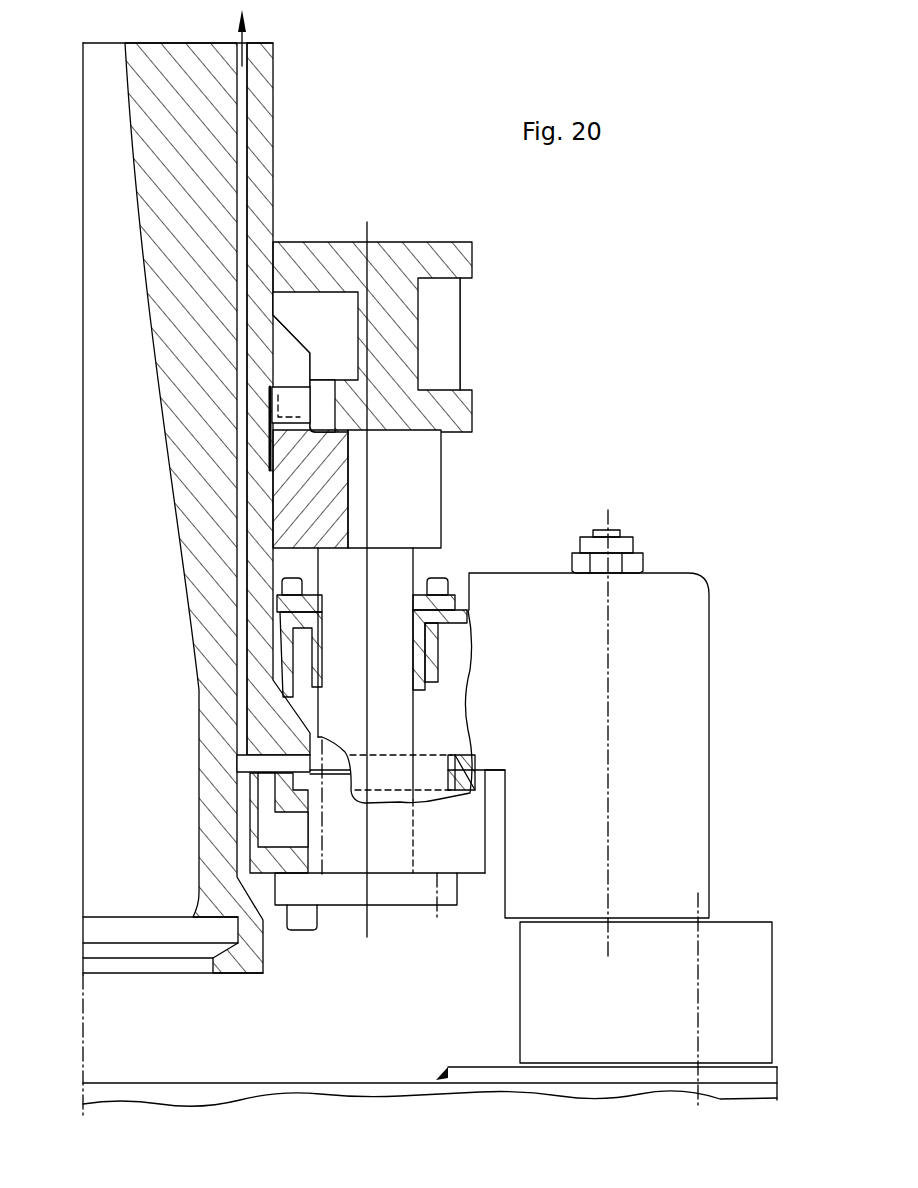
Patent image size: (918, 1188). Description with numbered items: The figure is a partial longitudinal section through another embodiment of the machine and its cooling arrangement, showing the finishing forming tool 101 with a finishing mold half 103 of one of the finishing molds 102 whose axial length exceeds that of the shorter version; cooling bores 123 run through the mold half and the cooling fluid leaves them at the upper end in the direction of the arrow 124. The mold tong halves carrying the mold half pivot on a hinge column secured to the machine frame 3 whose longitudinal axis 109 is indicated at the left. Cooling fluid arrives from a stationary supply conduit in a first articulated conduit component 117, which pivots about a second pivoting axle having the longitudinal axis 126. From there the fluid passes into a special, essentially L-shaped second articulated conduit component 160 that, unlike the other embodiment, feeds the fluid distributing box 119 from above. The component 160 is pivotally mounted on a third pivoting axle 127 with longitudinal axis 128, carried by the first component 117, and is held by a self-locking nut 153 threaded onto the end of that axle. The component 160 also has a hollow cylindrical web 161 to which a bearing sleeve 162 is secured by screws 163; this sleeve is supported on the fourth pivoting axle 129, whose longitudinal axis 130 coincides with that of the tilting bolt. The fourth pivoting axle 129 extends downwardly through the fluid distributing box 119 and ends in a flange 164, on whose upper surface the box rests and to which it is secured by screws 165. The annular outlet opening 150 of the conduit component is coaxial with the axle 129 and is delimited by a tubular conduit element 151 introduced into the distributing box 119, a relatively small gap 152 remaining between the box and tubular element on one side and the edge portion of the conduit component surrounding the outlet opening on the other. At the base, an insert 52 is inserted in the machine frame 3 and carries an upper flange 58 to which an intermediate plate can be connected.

The arrow 124 is at (244, 34).
The finishing mold 102 is at (273, 89).
The finishing mold half 103 is at (274, 134).
The finishing forming tool 101 is at (218, 981).
The longitudinal axis 109 is at (338, 490).
The fourth pivoting axle 129 is at (413, 560).
The screws 163 is at (448, 578).
The bearing sleeve 162 is at (425, 642).
The hollow cylindrical web 161 is at (438, 660).
The longitudinal axis 130 is at (367, 713).
The outlet opening 150 is at (440, 757).
The tubular conduit element 151 is at (441, 790).
The gap 152 is at (330, 747).
The fluid distributing box 119 is at (474, 875).
The flange 164 is at (403, 897).
The screws 165 is at (310, 928).
The first articulated conduit component 117 is at (521, 944).
The longitudinal axis 126 is at (708, 904).
The second articulated conduit component 160 is at (707, 578).
The third pivoting axle 127 is at (602, 530).
The longitudinal axis 128 is at (610, 517).
The self-locking nut 153 is at (634, 545).
The bores 123 is at (240, 735).
The machine frame 3 is at (337, 1090).
The insert 52 is at (440, 1076).
The upper flange 58 is at (487, 1077).